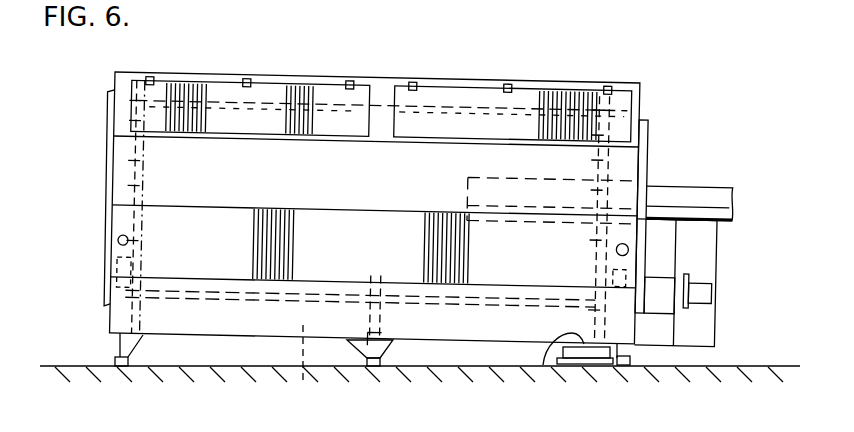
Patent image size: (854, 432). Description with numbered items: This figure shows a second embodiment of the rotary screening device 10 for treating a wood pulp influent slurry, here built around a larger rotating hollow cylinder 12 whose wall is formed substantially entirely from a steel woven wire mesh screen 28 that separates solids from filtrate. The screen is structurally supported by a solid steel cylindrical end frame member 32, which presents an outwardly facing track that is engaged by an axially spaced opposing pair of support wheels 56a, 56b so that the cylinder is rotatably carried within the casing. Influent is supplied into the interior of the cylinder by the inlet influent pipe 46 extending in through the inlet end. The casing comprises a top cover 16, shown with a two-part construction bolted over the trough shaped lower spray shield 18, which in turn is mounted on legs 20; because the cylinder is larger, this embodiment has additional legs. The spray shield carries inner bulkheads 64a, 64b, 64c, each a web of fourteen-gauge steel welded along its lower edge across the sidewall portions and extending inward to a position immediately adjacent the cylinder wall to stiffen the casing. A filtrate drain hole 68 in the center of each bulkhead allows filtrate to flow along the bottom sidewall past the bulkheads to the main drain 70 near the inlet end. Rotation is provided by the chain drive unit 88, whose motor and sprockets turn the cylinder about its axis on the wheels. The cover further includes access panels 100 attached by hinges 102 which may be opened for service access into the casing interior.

The rotary screening device 10 is at (660, 79).
The hollow cylinder 12 is at (106, 165).
The top cover 16 is at (319, 78).
The lower spray shield 18 is at (224, 340).
The legs 20 is at (118, 350).
The wire mesh screen 28 is at (302, 371).
The end frame member 32 is at (105, 143).
The inlet influent pipe 46 is at (714, 195).
The support wheel 56a is at (628, 278).
The support wheel 56b is at (114, 262).
The inner bulkhead 64a is at (562, 284).
The inner bulkhead 64b is at (144, 240).
The inner bulkhead 64c is at (365, 277).
The filtrate drain hole 68 is at (140, 314).
The main drain 70 is at (566, 338).
The chain drive unit 88 is at (724, 291).
The access panels 100 is at (218, 104).
The hinges 102 is at (414, 82).